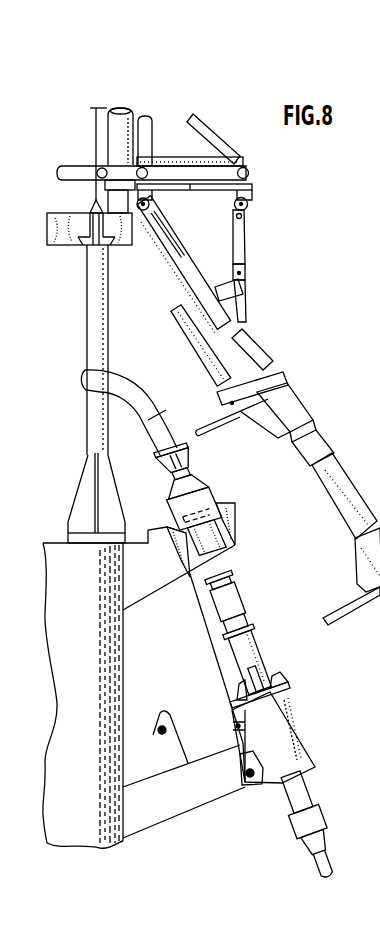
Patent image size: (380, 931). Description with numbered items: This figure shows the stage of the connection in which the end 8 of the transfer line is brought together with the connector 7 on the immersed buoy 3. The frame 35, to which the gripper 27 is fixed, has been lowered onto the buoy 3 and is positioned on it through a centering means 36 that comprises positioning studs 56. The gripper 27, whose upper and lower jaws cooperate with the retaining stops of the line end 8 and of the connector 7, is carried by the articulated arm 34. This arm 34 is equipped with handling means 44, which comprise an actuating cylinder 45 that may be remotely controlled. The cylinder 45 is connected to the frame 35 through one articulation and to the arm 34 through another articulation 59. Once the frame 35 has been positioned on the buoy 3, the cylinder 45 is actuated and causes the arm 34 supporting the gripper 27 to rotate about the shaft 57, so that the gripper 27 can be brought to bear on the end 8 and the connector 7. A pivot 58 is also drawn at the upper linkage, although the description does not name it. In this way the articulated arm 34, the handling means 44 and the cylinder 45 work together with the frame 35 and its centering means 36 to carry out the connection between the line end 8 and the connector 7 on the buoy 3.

The immersed buoy 3 is at (70, 833).
The connector 7 is at (232, 485).
The end of the transfer line 8 is at (255, 592).
The gripper 27 is at (319, 362).
The articulated arm 34 is at (176, 259).
The frame 35 is at (75, 146).
The centering means 36 is at (90, 325).
The handling means 44 is at (270, 224).
The actuating cylinder 45 is at (246, 238).
The positioning studs 56 is at (93, 241).
The shaft 57 is at (150, 201).
The pivot 58 is at (250, 204).
The articulation 59 is at (248, 272).